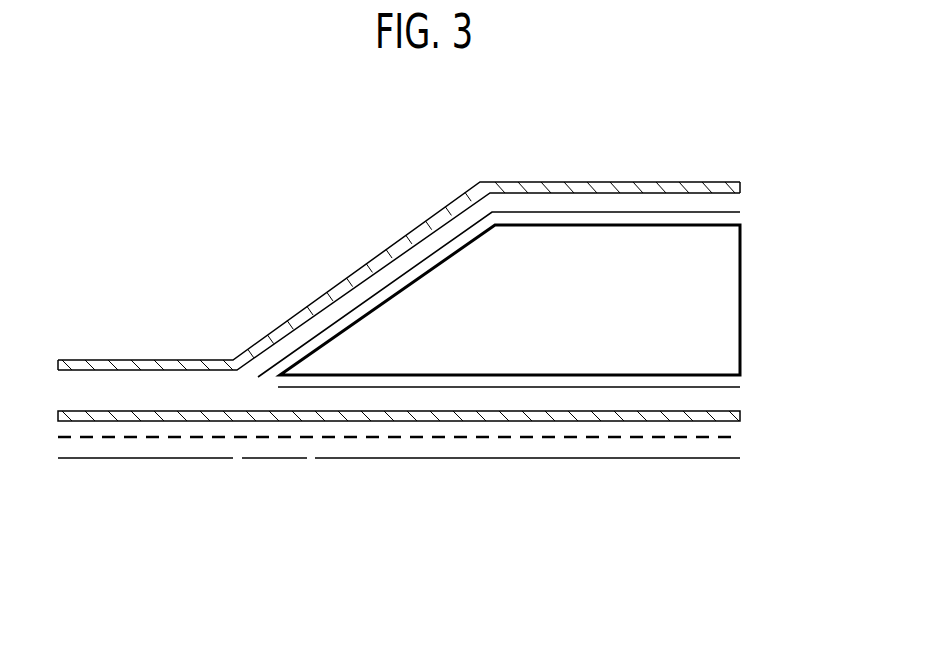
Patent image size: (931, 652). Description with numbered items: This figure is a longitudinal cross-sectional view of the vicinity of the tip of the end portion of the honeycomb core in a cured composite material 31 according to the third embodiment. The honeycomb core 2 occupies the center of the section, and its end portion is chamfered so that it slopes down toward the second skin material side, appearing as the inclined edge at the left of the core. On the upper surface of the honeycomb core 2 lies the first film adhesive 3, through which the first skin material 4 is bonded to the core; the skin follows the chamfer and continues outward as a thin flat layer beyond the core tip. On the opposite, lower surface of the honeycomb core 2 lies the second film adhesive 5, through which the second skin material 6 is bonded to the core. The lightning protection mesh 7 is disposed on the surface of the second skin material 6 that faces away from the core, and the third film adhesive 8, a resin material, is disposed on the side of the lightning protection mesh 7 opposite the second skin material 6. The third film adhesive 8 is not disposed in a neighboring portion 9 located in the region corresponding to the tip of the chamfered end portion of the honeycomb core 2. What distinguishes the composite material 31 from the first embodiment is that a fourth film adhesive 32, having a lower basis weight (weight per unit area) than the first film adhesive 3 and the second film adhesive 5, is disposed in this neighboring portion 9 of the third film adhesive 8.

The honeycomb core 2 is at (723, 293).
The first film adhesive 3 is at (723, 210).
The first skin material 4 is at (723, 181).
The second film adhesive 5 is at (722, 388).
The second skin material 6 is at (733, 408).
The lightning protection mesh 7 is at (707, 437).
The third film adhesive 8 is at (678, 457).
The neighboring portion 9 is at (243, 483).
The composite material 31 is at (155, 163).
The fourth film adhesive 32 is at (271, 462).